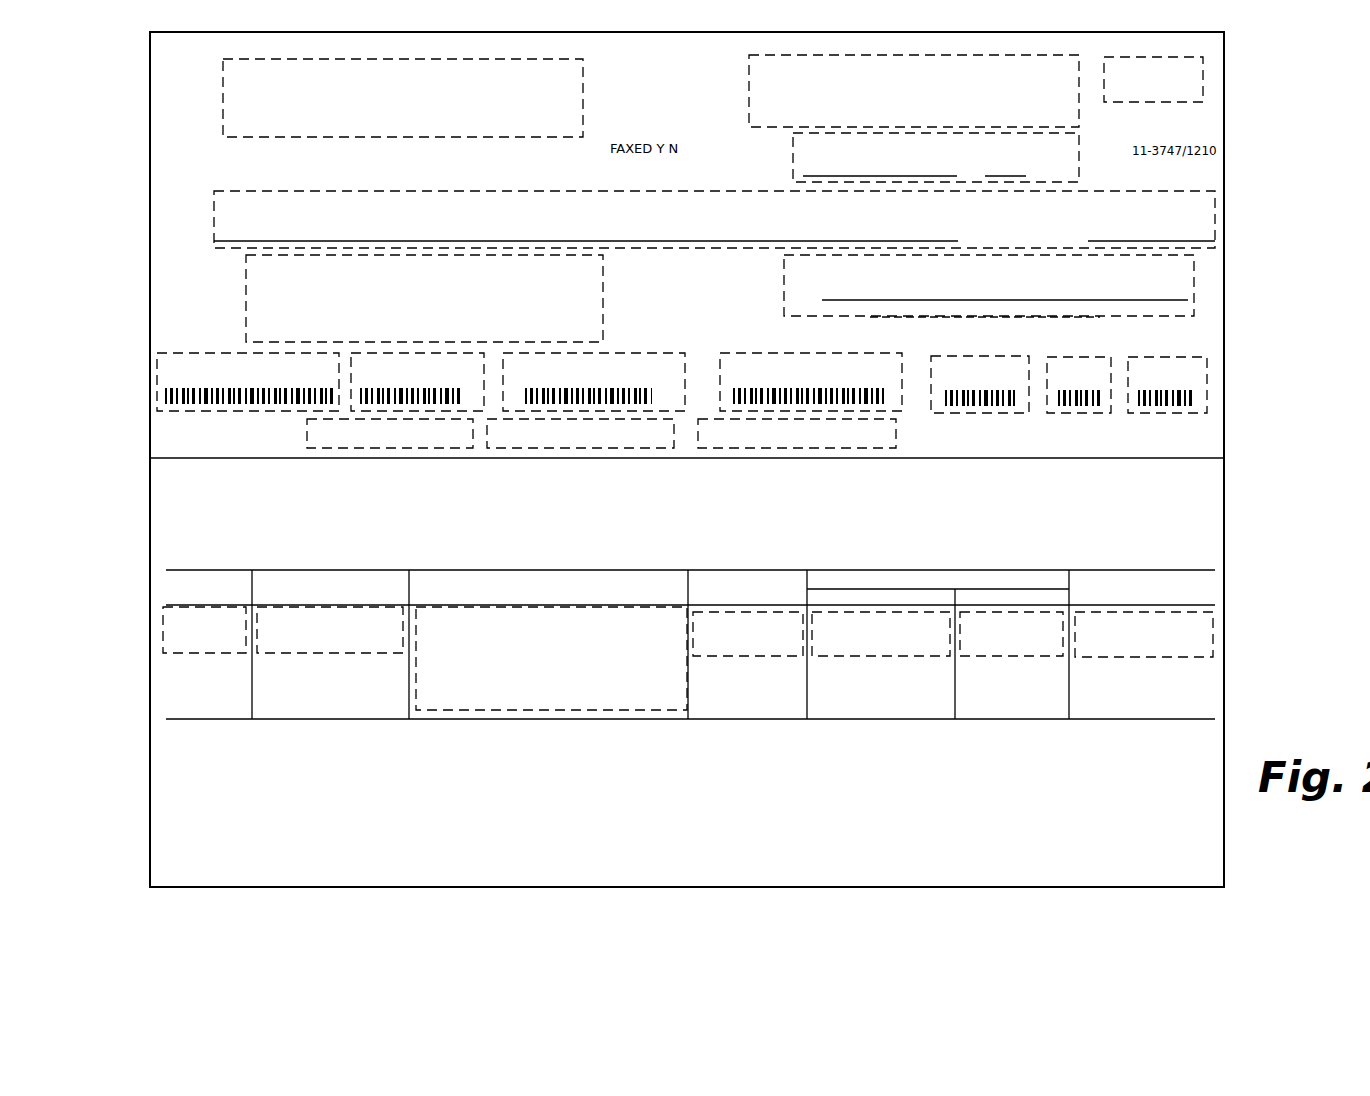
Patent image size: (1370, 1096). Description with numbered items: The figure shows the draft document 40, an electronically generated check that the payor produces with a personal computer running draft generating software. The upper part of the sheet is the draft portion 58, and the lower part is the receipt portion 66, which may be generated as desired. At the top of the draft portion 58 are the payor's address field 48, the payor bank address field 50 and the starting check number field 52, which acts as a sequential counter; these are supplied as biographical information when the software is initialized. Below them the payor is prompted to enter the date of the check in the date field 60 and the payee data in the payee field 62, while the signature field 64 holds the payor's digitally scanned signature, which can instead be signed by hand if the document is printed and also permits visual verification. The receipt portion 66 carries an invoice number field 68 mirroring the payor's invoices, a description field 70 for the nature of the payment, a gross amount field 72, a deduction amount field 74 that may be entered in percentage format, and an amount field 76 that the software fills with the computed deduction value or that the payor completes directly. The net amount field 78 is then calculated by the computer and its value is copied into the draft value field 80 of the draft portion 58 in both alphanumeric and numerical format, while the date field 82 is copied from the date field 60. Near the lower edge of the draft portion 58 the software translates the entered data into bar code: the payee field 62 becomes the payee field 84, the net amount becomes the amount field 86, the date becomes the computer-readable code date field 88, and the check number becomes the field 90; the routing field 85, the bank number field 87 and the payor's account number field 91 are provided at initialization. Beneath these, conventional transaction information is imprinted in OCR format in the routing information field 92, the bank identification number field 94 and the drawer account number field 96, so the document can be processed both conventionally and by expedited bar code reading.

The draft document 40 is at (1222, 580).
The payor's address field 48 is at (238, 102).
The payor bank address field 50 is at (752, 66).
The starting check number field 52 is at (1203, 91).
The draft portion 58 is at (1202, 184).
The date field 60 is at (1070, 153).
The payee field 62 is at (260, 272).
The signature field 64 is at (1186, 288).
The receipt portion 66 is at (1198, 497).
The invoice number field 68 is at (328, 645).
The description field 70 is at (428, 690).
The gross amount field 72 is at (773, 653).
The deduction amount field 74 is at (871, 652).
The amount field 76 is at (1012, 652).
The net amount field 78 is at (1153, 652).
The draft value field 80 is at (1205, 228).
The date field 82 is at (203, 647).
The payee field 84 is at (175, 362).
The routing computer-readable code field 85 is at (472, 408).
The amount field 86 is at (1000, 412).
The bank number field 87 is at (672, 400).
The computer-readable code date field 88 is at (1103, 412).
The check number computer-readable code field 90 is at (1197, 412).
The payor's account number field 91 is at (870, 375).
The OCR routing information number field 92 is at (316, 436).
The OCR bank identification number field 94 is at (622, 437).
The OCR drawer account number field 96 is at (842, 445).